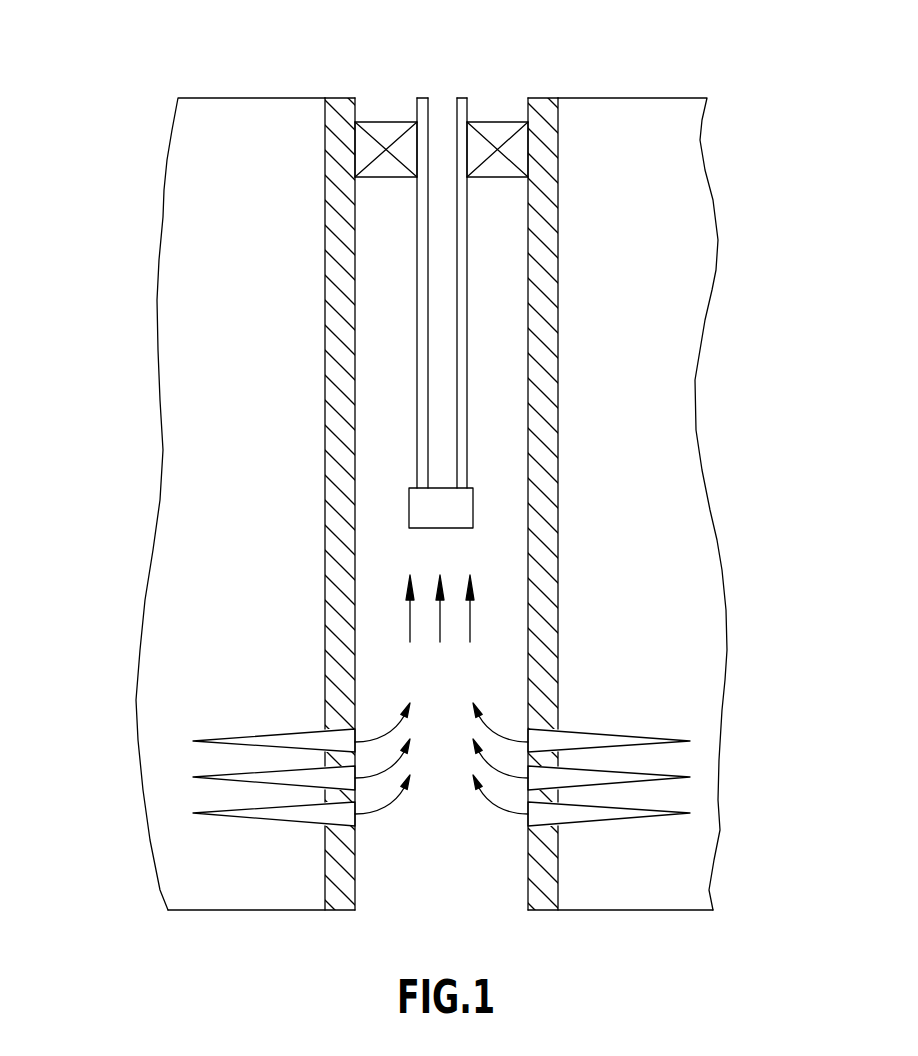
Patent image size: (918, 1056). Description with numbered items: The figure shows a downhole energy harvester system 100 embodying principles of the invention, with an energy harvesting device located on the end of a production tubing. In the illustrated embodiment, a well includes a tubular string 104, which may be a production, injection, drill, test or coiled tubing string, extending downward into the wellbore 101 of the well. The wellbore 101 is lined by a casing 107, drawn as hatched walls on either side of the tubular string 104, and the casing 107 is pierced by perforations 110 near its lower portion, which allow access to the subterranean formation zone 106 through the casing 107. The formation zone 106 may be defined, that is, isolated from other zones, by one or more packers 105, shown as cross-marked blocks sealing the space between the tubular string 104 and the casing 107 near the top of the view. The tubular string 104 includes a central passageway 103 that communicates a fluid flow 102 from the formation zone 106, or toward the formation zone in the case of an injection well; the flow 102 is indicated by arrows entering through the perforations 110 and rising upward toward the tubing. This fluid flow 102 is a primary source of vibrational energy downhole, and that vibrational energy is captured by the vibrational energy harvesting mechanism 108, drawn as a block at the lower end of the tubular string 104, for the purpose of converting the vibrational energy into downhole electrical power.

The downhole energy harvester system 100 is at (218, 60).
The wellbore 101 is at (683, 110).
The fluid flow 102 is at (499, 611).
The central passageway 103 is at (440, 243).
The tubular string 104 is at (467, 347).
The packer 105 is at (499, 122).
The subterranean formation zone 106 is at (694, 891).
The casing 107 is at (327, 295).
The vibrational energy harvesting mechanism 108 is at (473, 507).
The perforations 110 is at (652, 738).